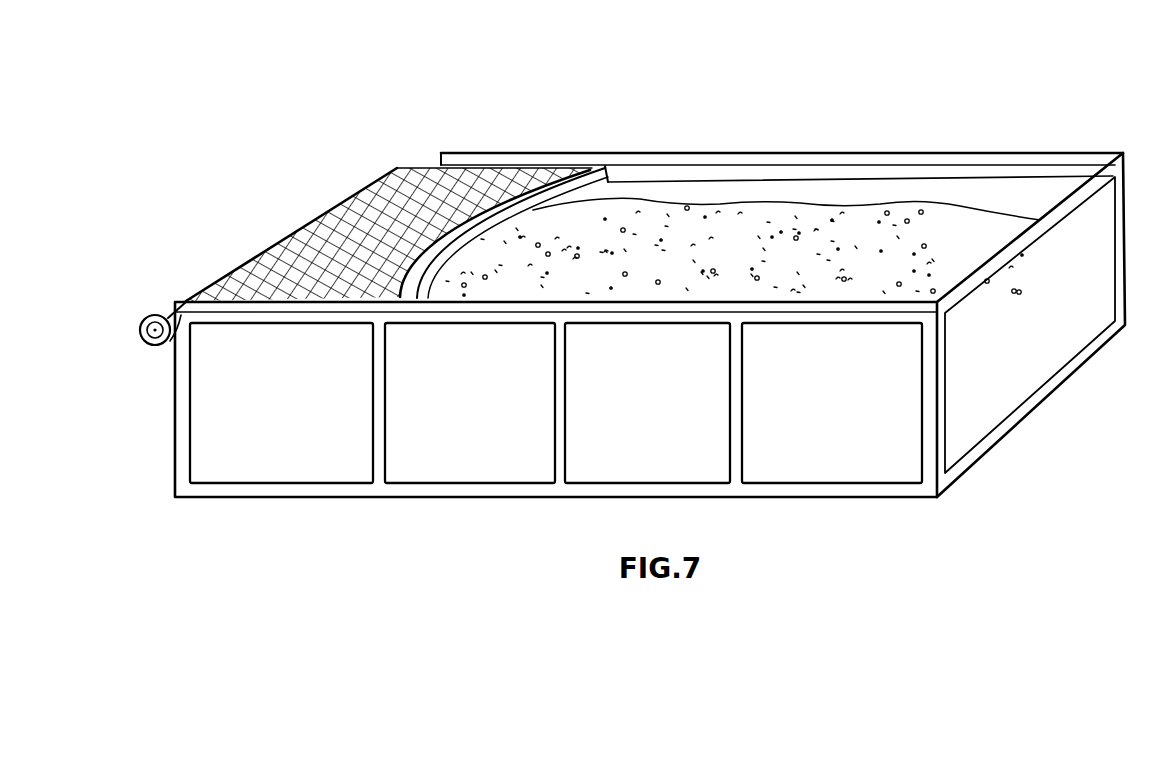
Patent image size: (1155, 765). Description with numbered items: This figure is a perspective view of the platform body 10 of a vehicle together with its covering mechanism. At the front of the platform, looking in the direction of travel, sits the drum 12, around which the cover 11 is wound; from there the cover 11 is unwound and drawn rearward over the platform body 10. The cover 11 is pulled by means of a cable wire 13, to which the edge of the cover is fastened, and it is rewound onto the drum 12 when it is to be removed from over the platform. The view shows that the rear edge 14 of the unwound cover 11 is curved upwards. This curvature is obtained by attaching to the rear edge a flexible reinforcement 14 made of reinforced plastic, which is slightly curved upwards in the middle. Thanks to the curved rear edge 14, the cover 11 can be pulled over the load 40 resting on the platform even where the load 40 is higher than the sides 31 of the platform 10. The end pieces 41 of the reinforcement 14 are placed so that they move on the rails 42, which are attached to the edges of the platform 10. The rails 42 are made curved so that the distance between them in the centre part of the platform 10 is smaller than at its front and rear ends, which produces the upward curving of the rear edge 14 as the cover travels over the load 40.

The platform body 10 is at (1026, 446).
The cover 11 is at (384, 197).
The drum 12 is at (152, 330).
The cable wire 13 is at (683, 168).
The rear edge of the cover 14 is at (522, 193).
The sides of the platform 31 is at (790, 152).
The load 40 is at (882, 220).
The end pieces of the reinforcement 41 is at (597, 185).
The rails 42 is at (940, 180).